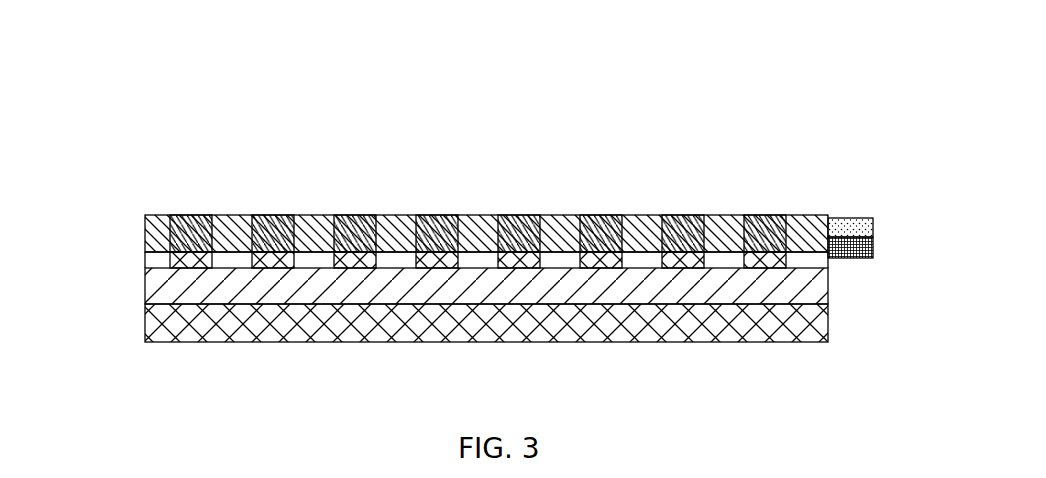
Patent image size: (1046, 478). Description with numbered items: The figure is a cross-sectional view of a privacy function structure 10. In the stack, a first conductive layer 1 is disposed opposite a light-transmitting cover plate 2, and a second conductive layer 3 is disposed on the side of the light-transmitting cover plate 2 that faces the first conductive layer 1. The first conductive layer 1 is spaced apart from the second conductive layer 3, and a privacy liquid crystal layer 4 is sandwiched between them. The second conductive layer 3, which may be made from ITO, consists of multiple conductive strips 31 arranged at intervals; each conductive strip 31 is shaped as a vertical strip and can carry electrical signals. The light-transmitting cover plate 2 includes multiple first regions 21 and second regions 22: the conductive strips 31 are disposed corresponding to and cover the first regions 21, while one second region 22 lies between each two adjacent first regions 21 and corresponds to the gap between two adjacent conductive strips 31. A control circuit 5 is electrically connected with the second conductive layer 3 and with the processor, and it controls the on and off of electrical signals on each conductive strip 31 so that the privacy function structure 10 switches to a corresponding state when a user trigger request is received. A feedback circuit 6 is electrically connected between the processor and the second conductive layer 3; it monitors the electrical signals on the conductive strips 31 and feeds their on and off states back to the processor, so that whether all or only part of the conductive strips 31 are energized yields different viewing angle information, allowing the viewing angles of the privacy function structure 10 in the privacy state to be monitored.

The privacy function structure 10 is at (471, 136).
The first conductive layer 1 is at (145, 330).
The light-transmitting cover plate 2 is at (145, 228).
The second conductive layer 3 is at (822, 261).
The privacy liquid crystal layer 4 is at (145, 283).
The control circuit 5 is at (876, 252).
The feedback circuit 6 is at (882, 223).
The first region 21 is at (187, 213).
The second region 22 is at (270, 213).
The conductive strip 31 is at (697, 213).